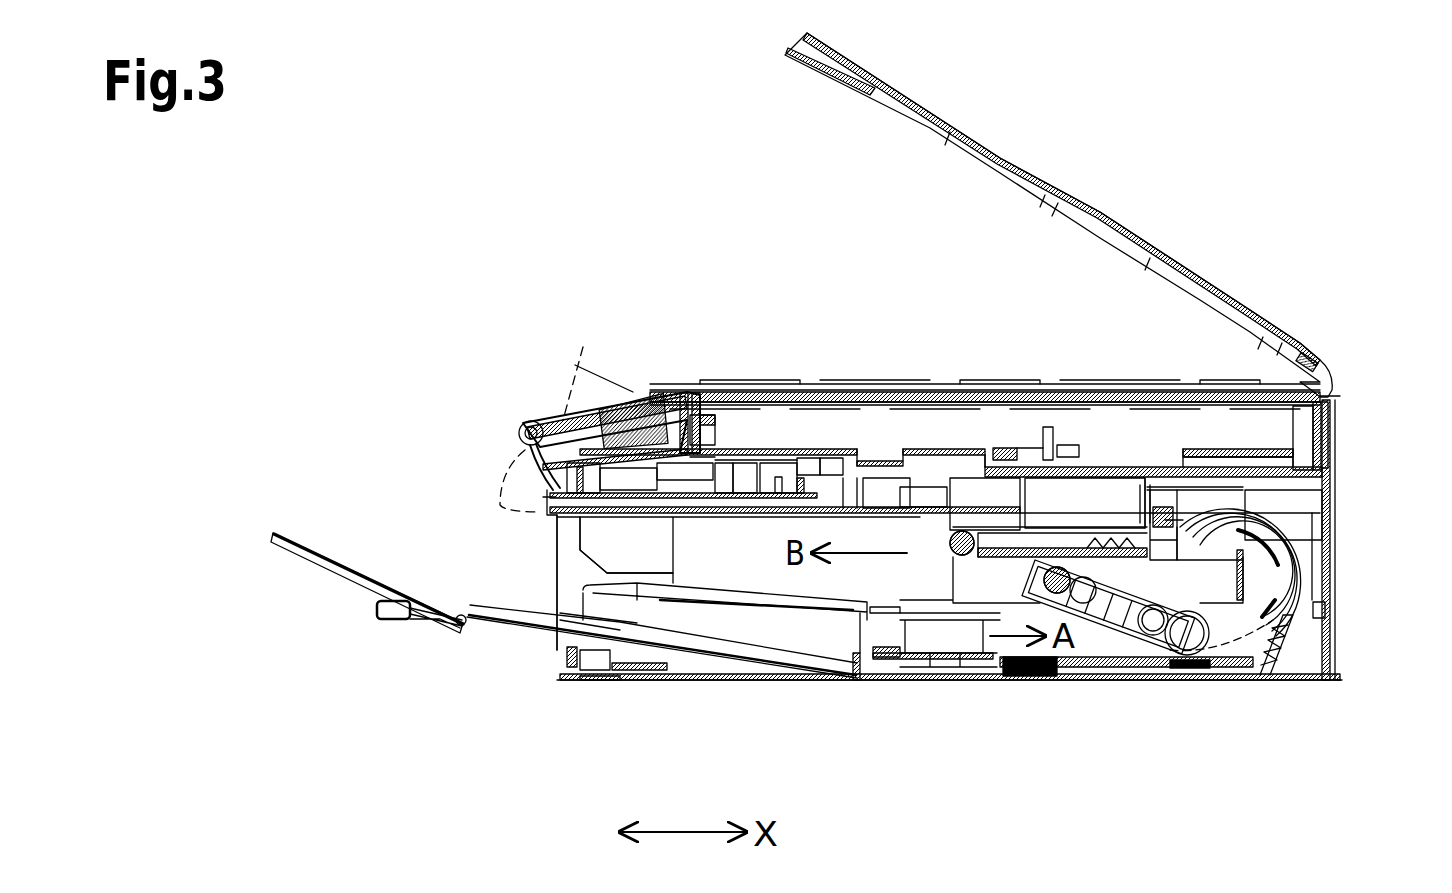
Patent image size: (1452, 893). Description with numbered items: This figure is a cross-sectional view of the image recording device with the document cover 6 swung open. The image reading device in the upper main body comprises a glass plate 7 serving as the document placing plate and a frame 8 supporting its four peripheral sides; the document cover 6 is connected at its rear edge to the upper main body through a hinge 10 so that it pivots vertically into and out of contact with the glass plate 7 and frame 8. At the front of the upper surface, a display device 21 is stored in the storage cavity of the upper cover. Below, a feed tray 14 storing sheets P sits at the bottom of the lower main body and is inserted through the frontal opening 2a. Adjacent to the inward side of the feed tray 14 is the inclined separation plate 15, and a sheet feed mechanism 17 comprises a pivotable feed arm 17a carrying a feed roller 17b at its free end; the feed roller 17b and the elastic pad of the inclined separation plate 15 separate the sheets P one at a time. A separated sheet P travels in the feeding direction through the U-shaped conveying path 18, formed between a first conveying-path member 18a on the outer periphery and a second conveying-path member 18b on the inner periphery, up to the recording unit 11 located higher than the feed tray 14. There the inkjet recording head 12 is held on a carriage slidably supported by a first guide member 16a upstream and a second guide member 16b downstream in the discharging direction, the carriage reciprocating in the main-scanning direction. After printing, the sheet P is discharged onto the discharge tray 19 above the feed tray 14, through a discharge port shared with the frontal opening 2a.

The document cover 6 is at (1095, 182).
The frame 8 is at (847, 383).
The hinge 10 is at (1334, 396).
The display device 21 is at (618, 391).
The frontal opening 2a is at (570, 562).
The discharge tray 19 is at (793, 605).
The feed tray 14 is at (920, 676).
The glass plate 7 is at (1013, 390).
The recording unit 11 is at (1100, 476).
The inkjet recording head 12 is at (1127, 465).
The first guide member 16a is at (1215, 490).
The second guide member 16b is at (990, 466).
The conveying path 18 is at (1287, 545).
The first conveying-path member 18a is at (1297, 563).
The second conveying-path member 18b is at (1268, 580).
The sheet feed mechanism 17 is at (1115, 650).
The feed arm 17a is at (1150, 633).
The feed roller 17b is at (1192, 657).
The inclined separation plate 15 is at (1282, 650).
The sheet P is at (1337, 680).